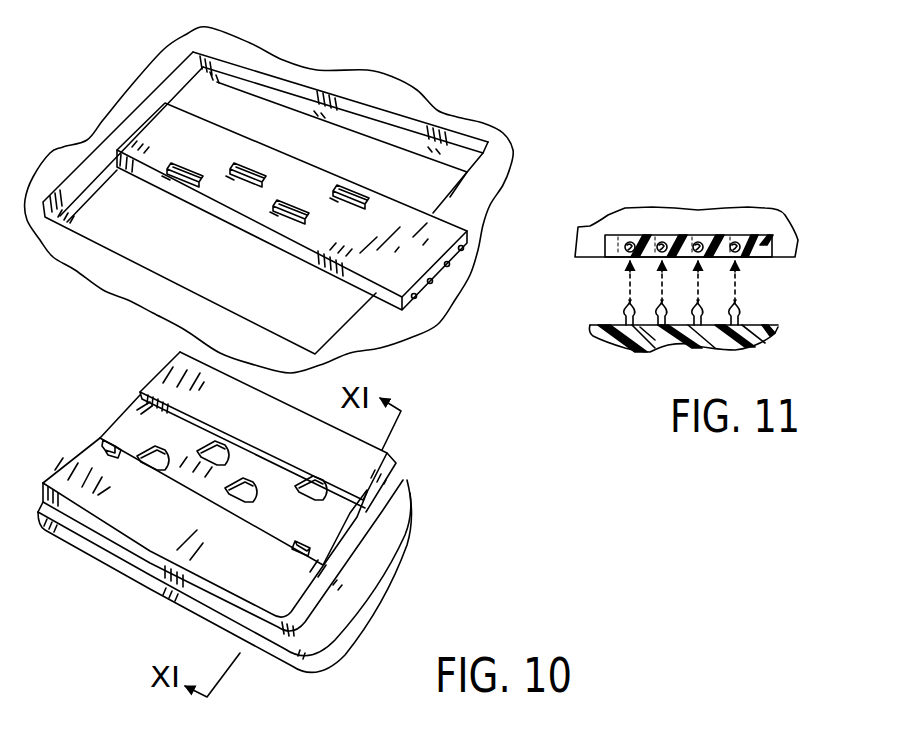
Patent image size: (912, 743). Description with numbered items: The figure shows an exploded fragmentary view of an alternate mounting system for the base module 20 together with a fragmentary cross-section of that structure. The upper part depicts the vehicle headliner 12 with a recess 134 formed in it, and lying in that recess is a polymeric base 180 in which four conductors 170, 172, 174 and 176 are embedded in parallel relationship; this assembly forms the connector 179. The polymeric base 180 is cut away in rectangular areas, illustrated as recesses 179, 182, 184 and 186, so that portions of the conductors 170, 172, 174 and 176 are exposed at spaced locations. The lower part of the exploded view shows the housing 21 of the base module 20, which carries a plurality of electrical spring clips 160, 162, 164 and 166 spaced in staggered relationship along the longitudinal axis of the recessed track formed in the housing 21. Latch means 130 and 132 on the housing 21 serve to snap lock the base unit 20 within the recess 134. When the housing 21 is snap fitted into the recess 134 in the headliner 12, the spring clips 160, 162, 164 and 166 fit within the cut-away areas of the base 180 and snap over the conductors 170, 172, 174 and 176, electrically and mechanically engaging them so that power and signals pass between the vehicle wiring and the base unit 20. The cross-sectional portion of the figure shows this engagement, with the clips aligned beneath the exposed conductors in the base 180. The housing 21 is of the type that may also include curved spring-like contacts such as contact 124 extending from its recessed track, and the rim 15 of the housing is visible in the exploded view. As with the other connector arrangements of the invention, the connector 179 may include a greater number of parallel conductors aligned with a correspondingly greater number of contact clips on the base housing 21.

In FIG. 10, the headliner 12 is at (480, 182).
In FIG. 10, the recess 134 is at (490, 153).
In FIG. 10, the connector 179 is at (507, 222).
In FIG. 11, the connector 179 is at (793, 251).
In FIG. 10, the conductor 170 is at (184, 168).
In FIG. 11, the conductor 170 is at (633, 242).
In FIG. 10, the recess 182 is at (253, 168).
In FIG. 10, the conductor 174 is at (300, 191).
In FIG. 11, the conductor 174 is at (667, 242).
In FIG. 10, the recess 186 is at (353, 188).
In FIG. 10, the polymeric base 180 is at (167, 171).
In FIG. 10, the conductor 172 is at (232, 187).
In FIG. 11, the conductor 172 is at (703, 242).
In FIG. 10, the recess 184 is at (278, 205).
In FIG. 10, the conductor 176 is at (350, 195).
In FIG. 11, the conductor 176 is at (740, 242).
In FIG. 10, the housing 21 is at (403, 458).
In FIG. 10, the contact 124 is at (352, 500).
In FIG. 10, the tray rim 15 is at (378, 590).
In FIG. 10, the base module 20 is at (362, 640).
In FIG. 10, the latch means 130 is at (108, 440).
In FIG. 10, the latch means 132 is at (293, 542).
In FIG. 10, the electrical spring clip 160 is at (156, 458).
In FIG. 11, the electrical spring clip 160 is at (624, 311).
In FIG. 10, the electrical spring clip 162 is at (220, 448).
In FIG. 11, the electrical spring clip 162 is at (738, 340).
In FIG. 10, the electrical spring clip 164 is at (250, 484).
In FIG. 11, the electrical spring clip 164 is at (687, 340).
In FIG. 10, the electrical spring clip 166 is at (330, 476).
In FIG. 11, the electrical spring clip 166 is at (738, 313).